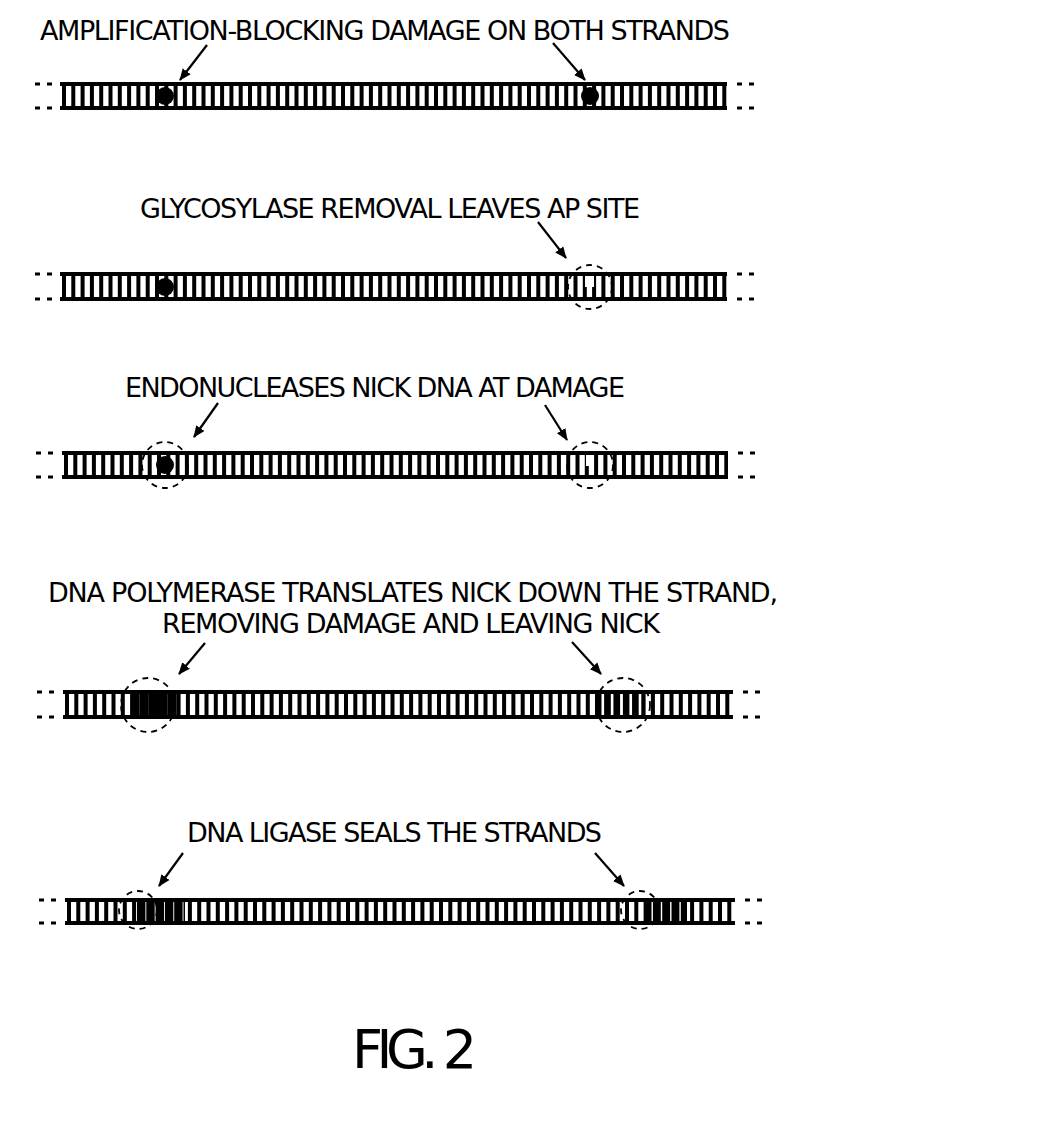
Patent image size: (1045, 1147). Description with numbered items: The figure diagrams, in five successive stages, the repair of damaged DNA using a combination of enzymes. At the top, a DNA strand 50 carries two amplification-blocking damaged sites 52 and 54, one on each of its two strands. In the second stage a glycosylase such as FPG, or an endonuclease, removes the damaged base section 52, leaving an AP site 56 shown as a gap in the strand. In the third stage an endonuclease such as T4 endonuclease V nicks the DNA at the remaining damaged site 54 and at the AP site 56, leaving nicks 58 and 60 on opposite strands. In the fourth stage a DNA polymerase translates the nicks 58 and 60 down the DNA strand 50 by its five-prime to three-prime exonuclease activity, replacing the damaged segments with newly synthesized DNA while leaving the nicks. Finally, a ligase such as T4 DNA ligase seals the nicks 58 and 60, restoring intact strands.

The DNA strand 50 is at (680, 110).
The damaged site 52 is at (592, 86).
The damaged site 54 is at (164, 86).
The AP site 56 is at (592, 280).
The nick 58 is at (165, 480).
The nick 60 is at (593, 458).